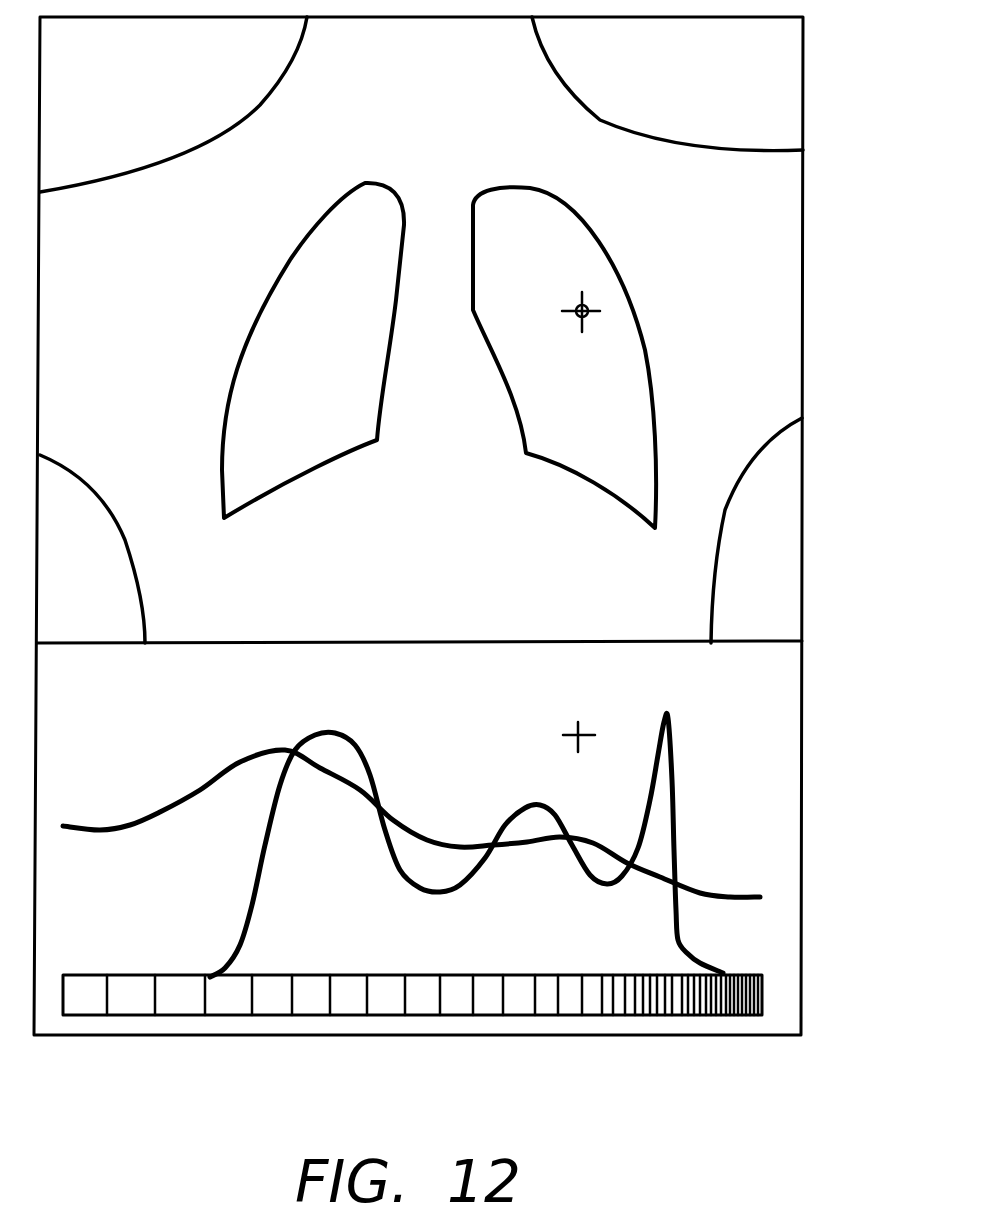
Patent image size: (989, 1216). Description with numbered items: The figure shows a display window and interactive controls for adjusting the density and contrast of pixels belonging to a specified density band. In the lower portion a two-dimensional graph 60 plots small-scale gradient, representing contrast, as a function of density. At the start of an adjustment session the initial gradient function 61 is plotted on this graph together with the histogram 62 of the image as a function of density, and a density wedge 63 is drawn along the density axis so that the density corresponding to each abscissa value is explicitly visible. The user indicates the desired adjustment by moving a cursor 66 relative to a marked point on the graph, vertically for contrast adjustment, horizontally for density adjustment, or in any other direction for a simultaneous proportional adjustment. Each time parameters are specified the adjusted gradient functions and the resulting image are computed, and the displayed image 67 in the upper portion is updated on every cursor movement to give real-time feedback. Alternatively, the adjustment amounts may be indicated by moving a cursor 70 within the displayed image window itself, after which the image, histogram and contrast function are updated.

The two-dimensional graph 60 is at (775, 722).
The initial gradient function 61 is at (228, 763).
The histogram 62 is at (258, 893).
The density wedge 63 is at (388, 975).
The cursor 66 is at (575, 728).
The displayed image 67 is at (780, 237).
The cursor 70 is at (584, 304).